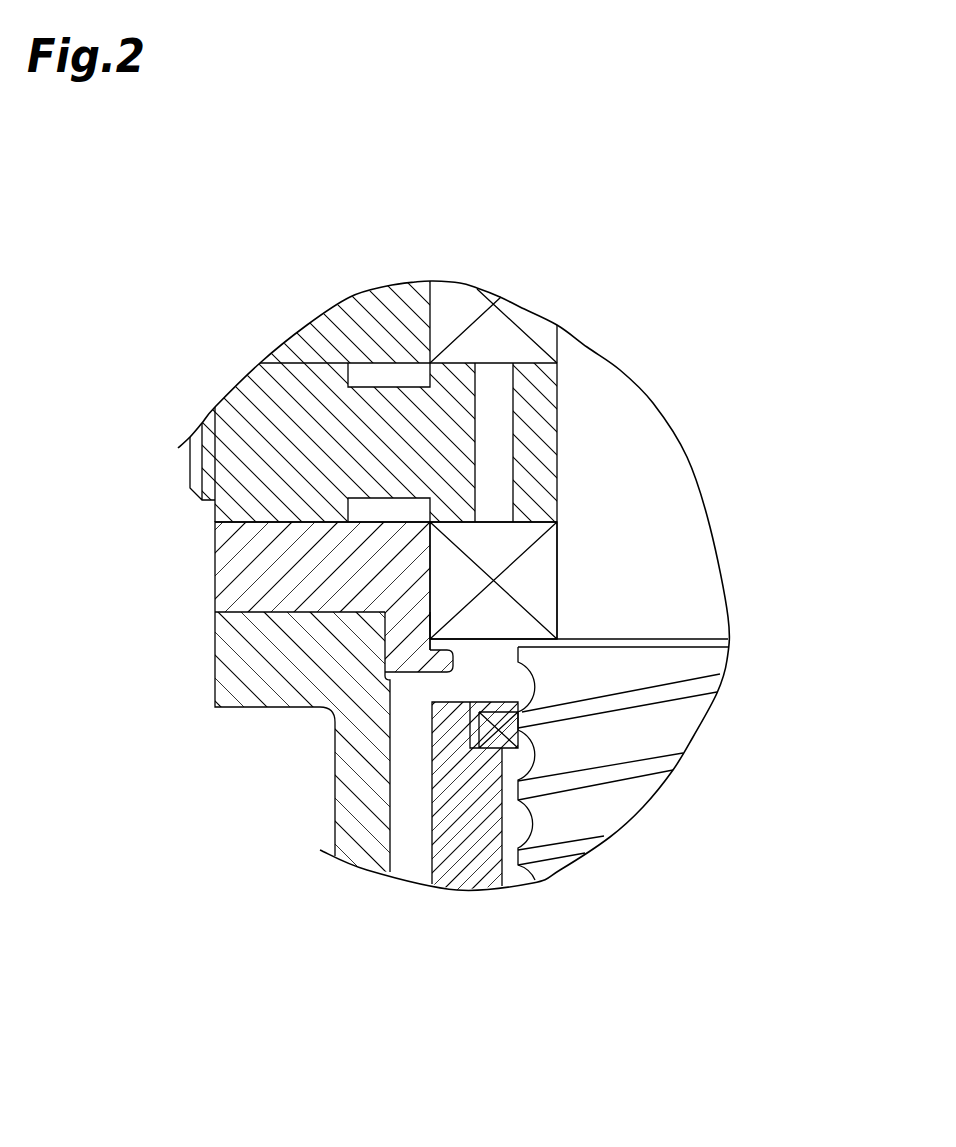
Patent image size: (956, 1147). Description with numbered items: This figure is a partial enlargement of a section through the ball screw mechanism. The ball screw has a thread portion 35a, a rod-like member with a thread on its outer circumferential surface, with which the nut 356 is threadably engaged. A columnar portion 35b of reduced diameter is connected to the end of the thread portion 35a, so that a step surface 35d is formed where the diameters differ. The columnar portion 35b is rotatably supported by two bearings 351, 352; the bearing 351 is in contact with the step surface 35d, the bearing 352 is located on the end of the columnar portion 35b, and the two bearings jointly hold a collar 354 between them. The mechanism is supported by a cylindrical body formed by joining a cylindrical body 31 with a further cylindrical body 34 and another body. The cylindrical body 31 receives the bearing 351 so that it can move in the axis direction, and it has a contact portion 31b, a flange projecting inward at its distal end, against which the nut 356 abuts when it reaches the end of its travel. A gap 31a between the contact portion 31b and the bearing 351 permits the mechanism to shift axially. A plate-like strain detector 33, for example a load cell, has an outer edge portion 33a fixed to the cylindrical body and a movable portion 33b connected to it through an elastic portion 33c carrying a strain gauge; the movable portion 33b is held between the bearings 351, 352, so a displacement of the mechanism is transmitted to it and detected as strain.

The cylindrical body 31 is at (228, 563).
The gap 31a is at (433, 637).
The contact portion 31b is at (433, 666).
The strain detector 33 is at (190, 466).
The outer edge portion 33a is at (242, 398).
The movable portion 33b is at (463, 473).
The elastic portion 33c is at (381, 412).
The cylindrical body 34 is at (228, 648).
The thread portion 35a is at (657, 720).
The columnar portion 35b is at (647, 507).
The step surface 35d is at (553, 632).
The bearing 351 is at (545, 568).
The bearing 352 is at (453, 305).
The collar 354 is at (538, 413).
The nut 356 is at (471, 868).